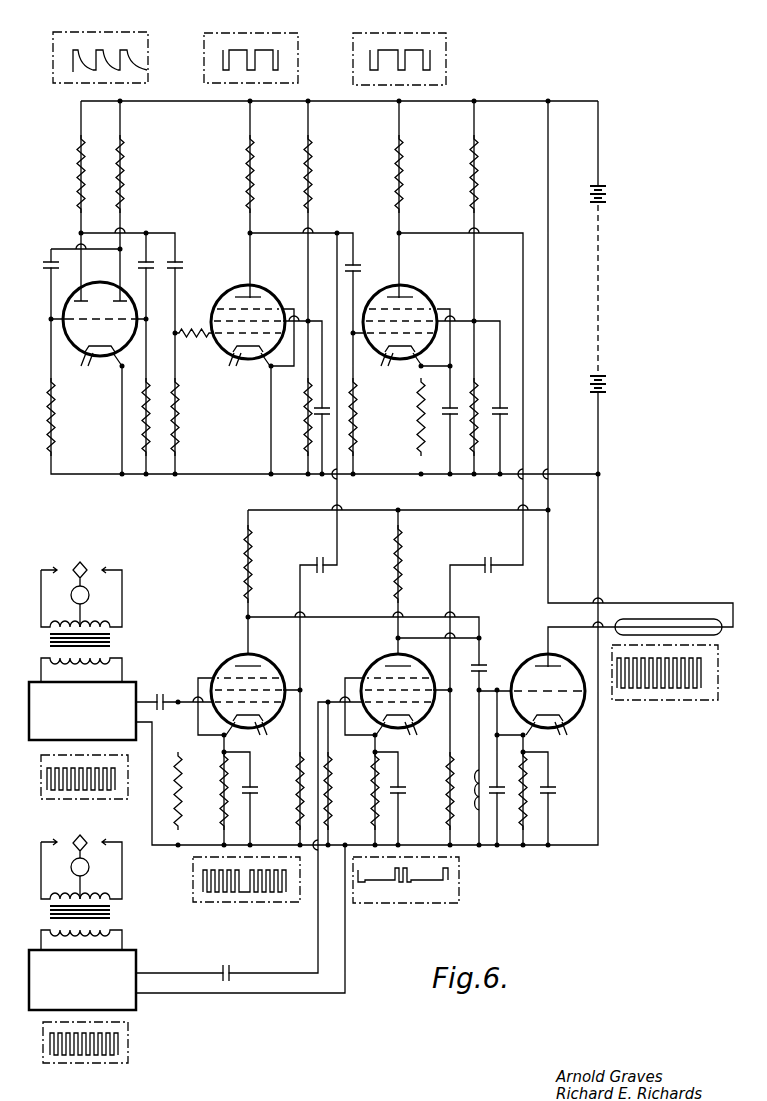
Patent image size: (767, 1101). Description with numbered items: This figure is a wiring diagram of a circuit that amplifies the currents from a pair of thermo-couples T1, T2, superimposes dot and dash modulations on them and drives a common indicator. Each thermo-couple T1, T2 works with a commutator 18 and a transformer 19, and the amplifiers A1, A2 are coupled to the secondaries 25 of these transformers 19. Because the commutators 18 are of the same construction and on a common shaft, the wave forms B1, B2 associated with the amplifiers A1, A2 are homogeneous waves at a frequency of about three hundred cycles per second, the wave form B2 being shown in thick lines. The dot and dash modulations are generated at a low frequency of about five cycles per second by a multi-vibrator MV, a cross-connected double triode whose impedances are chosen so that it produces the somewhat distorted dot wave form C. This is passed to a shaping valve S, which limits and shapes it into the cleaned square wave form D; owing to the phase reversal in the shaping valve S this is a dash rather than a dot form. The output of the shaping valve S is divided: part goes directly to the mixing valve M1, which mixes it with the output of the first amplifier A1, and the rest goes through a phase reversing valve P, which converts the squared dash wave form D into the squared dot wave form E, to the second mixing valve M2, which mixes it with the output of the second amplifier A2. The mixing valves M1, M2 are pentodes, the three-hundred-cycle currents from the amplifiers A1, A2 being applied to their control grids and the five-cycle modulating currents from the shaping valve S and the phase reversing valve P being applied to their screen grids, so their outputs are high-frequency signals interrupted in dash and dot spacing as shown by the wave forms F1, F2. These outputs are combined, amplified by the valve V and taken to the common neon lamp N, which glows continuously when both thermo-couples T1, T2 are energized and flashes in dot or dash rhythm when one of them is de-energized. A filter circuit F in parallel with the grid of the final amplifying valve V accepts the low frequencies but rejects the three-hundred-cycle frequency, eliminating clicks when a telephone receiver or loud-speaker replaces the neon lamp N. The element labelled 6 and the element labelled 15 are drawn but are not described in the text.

The wave form C is at (98, 44).
The cleaned square wave form D is at (250, 42).
The squared dot wave form E is at (404, 42).
The multi-vibrator MV is at (100, 336).
The shaping valve S is at (248, 337).
The phase reversing valve P is at (400, 340).
The mixing valve M1 is at (236, 658).
The second mixing valve M2 is at (384, 658).
The amplifying valve V is at (532, 660).
The neon lamp N is at (659, 622).
The output waveform 6 is at (720, 672).
The thermo-couple T1 is at (81, 701).
The thermo-couple T2 is at (90, 866).
The commutator 18 is at (85, 566).
The transducer element 15 is at (95, 620).
The transformer 19 is at (50, 639).
The secondary 25 is at (117, 666).
The amplifier A1 is at (82, 711).
The amplifier A2 is at (82, 980).
The wave form B1 is at (83, 798).
The wave form B2 is at (95, 1063).
The wave form F1 is at (246, 901).
The wave form F2 is at (430, 902).
The filter circuit F is at (488, 828).